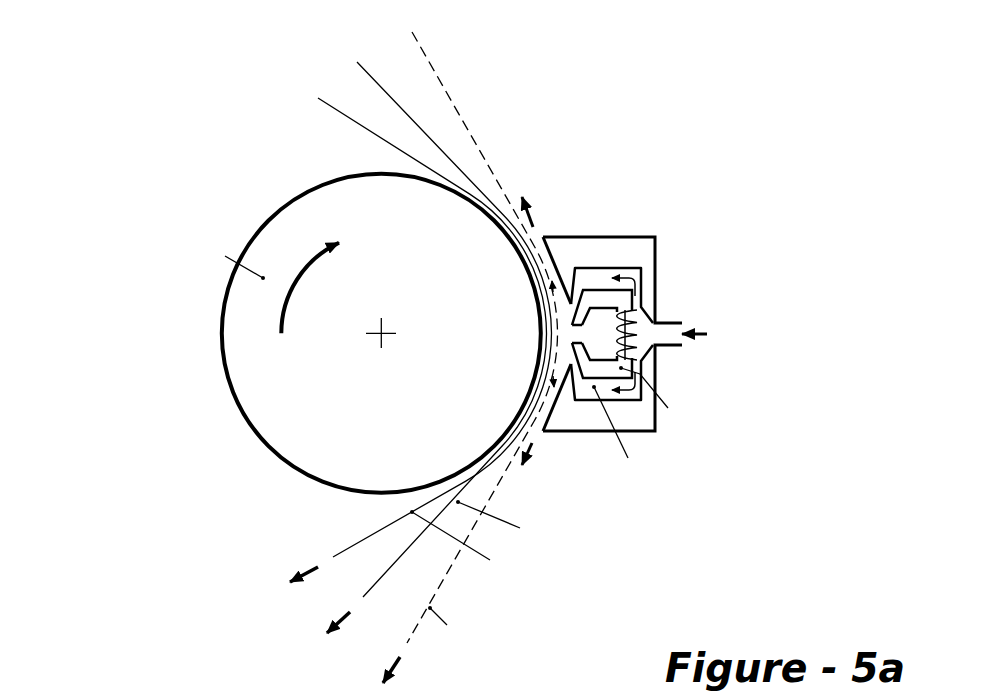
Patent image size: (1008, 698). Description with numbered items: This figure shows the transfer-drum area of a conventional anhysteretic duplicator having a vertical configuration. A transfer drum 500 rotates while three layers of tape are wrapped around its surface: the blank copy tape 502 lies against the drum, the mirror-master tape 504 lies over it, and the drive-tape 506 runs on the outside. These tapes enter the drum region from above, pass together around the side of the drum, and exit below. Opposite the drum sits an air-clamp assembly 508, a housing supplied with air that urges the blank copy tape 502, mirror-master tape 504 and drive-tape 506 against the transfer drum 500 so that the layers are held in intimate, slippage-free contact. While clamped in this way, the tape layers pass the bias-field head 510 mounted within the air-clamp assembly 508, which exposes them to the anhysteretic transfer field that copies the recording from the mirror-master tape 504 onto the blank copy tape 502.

The transfer drum 500 is at (300, 333).
The blank copy tape 502 is at (451, 359).
The mirror-master tape 504 is at (463, 310).
The drive-tape 506 is at (470, 341).
The air-clamp assembly 508 is at (613, 236).
The bias-field head 510 is at (633, 325).